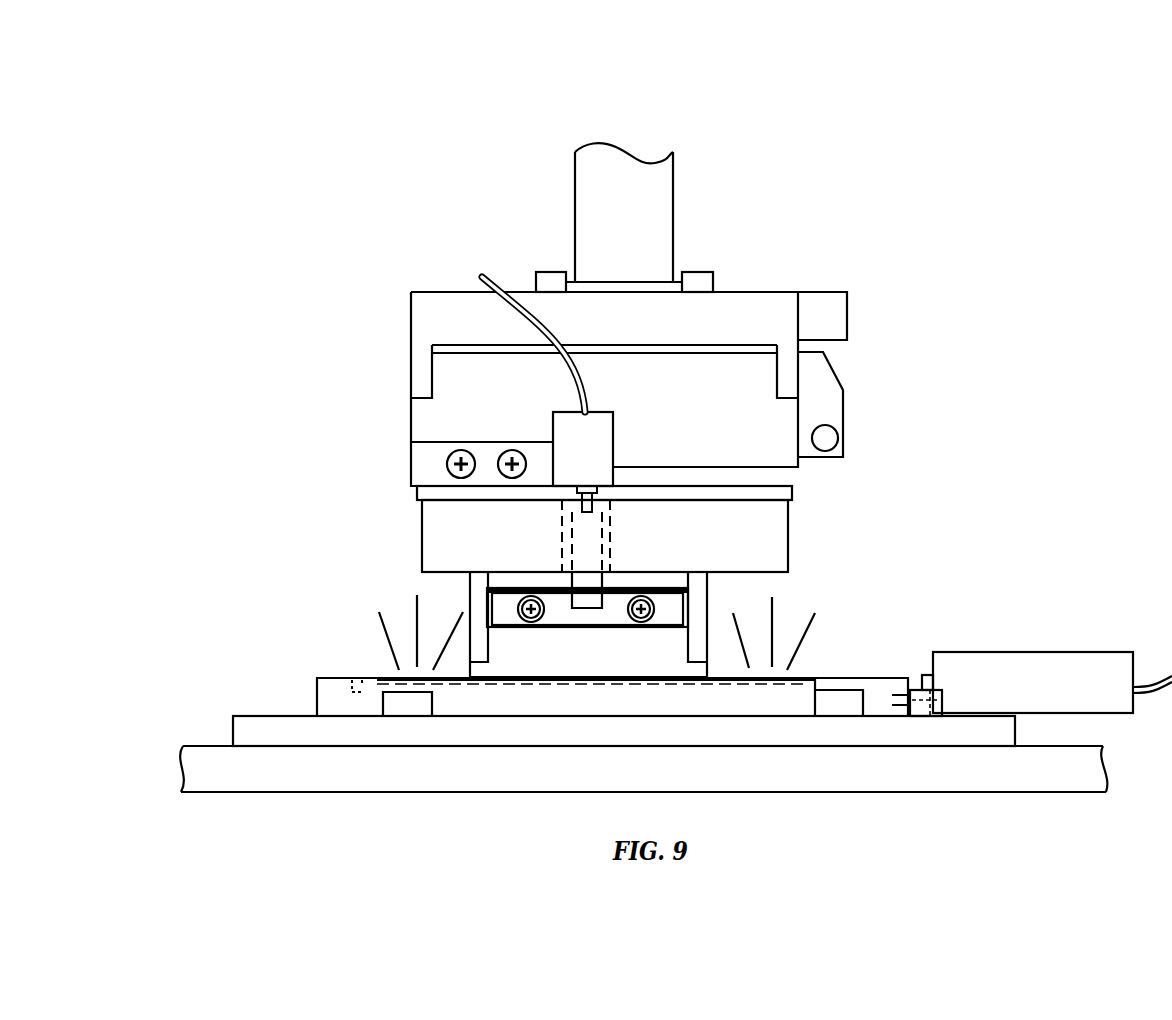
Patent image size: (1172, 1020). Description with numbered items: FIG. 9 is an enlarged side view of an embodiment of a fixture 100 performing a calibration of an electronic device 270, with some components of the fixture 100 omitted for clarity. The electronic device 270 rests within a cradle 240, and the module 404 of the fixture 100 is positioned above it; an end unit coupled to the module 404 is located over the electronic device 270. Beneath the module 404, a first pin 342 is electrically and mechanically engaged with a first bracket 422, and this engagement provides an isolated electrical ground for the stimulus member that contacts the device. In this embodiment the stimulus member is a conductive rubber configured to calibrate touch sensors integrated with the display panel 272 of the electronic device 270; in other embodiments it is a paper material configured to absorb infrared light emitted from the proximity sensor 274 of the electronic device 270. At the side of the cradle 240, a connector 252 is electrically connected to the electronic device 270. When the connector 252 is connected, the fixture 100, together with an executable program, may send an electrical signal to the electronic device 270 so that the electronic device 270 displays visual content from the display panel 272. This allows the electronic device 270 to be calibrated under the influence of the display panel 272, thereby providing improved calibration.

The fixture 100 is at (1086, 122).
The module 404 is at (346, 512).
The first pin 342 is at (592, 497).
The first bracket 422 is at (605, 580).
The electronic device 270 is at (278, 648).
The display panel 272 is at (800, 678).
The proximity sensor 274 is at (352, 680).
The connector 252 is at (911, 690).
The cradle 240 is at (233, 732).